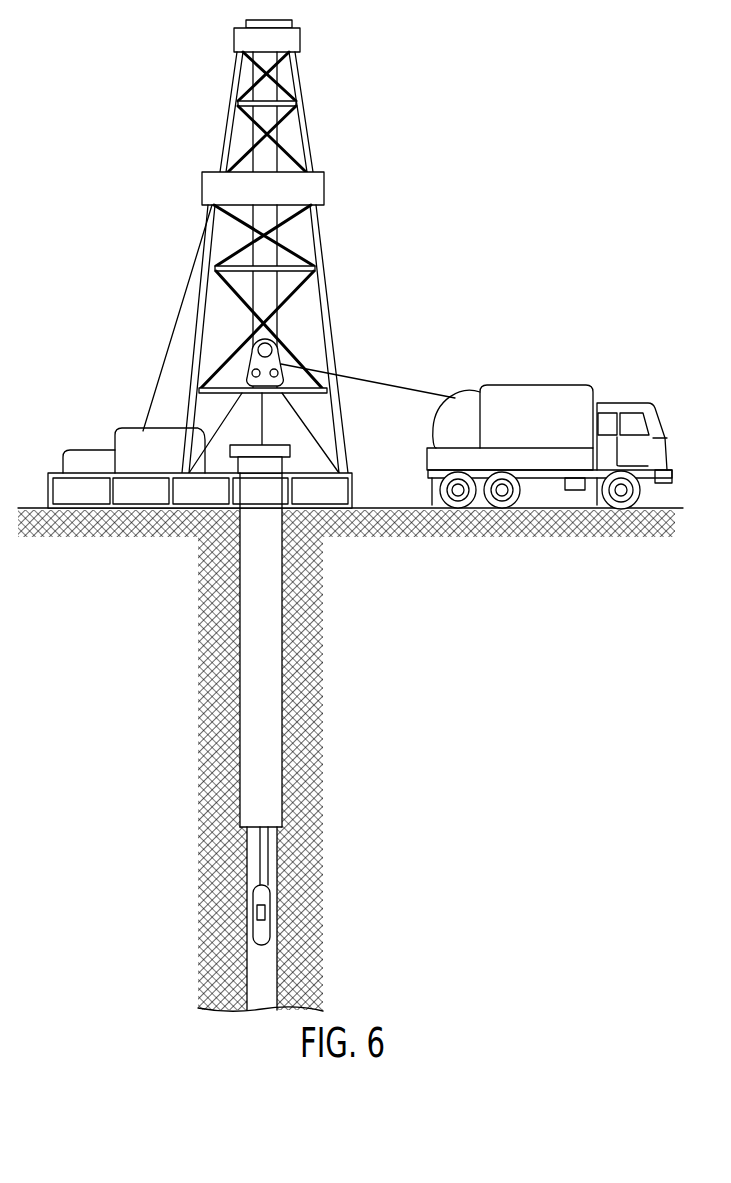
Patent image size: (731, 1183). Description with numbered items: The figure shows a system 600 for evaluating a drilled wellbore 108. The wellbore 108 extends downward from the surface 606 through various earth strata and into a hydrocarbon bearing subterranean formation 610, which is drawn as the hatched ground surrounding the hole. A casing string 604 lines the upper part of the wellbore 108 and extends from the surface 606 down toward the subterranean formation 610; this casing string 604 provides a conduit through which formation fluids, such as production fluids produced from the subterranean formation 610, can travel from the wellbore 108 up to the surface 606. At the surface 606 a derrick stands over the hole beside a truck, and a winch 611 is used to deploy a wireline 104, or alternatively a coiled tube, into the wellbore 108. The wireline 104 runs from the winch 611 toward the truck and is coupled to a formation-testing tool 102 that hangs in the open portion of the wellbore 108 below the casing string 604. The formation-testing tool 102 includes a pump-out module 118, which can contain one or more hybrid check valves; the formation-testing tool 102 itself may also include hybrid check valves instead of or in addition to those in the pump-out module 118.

The system 600 is at (497, 190).
The winch 611 is at (275, 343).
The wireline 104 is at (377, 382).
The surface 606 is at (272, 445).
The subterranean formation 610 is at (325, 633).
The casing string 604 is at (245, 750).
The wellbore 108 is at (282, 762).
The formation-testing tool 102 is at (272, 885).
The pump-out module 118 is at (265, 910).